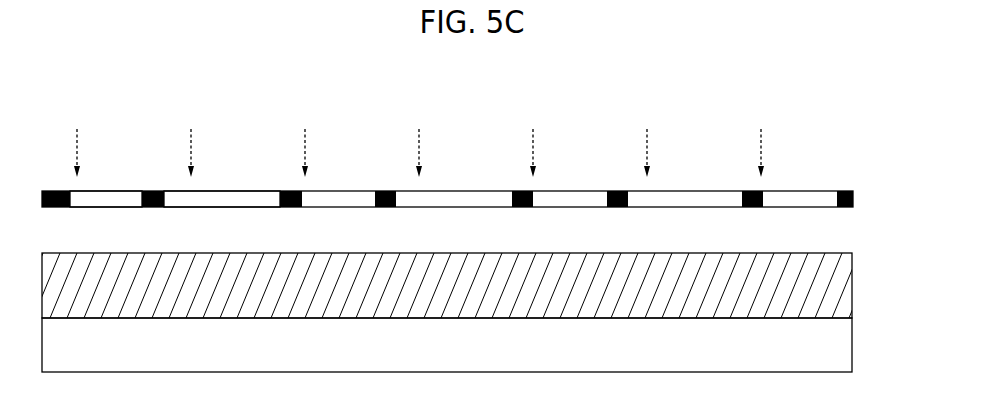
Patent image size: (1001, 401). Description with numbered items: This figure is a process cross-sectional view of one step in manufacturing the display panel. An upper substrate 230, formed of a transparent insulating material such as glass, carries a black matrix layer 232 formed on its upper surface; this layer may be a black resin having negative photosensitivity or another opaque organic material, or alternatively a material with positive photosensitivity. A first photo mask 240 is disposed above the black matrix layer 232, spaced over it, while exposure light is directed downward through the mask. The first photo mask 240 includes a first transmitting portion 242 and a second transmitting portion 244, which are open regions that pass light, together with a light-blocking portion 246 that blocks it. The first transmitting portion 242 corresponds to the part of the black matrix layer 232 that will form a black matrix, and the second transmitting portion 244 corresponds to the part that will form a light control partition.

The upper substrate 230 is at (837, 350).
The black matrix layer 232 is at (837, 285).
The first photo mask 240 is at (843, 186).
The first transmitting portion 242 is at (118, 197).
The second transmitting portion 244 is at (222, 197).
The light-blocking portion 246 is at (288, 192).